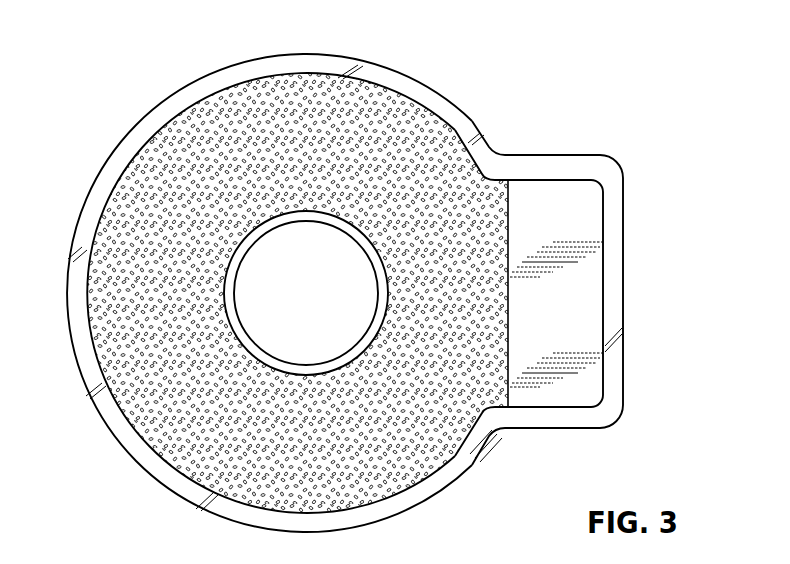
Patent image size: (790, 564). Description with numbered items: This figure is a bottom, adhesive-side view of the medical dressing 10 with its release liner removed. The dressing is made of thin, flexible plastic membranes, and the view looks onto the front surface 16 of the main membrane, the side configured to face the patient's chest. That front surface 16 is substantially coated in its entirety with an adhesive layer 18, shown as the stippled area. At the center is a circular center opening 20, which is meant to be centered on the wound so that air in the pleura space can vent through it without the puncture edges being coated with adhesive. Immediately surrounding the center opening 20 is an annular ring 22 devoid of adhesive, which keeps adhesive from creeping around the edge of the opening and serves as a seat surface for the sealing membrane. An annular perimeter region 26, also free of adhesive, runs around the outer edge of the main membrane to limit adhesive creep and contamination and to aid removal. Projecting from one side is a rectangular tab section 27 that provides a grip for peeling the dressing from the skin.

The medical dressing 10 is at (600, 123).
The front surface 16 is at (103, 150).
The adhesive layer 18 is at (368, 113).
The center opening 20 is at (328, 297).
The annular ring 22 is at (290, 223).
The annular perimeter region 26 is at (489, 158).
The rectangular tab section 27 is at (591, 393).